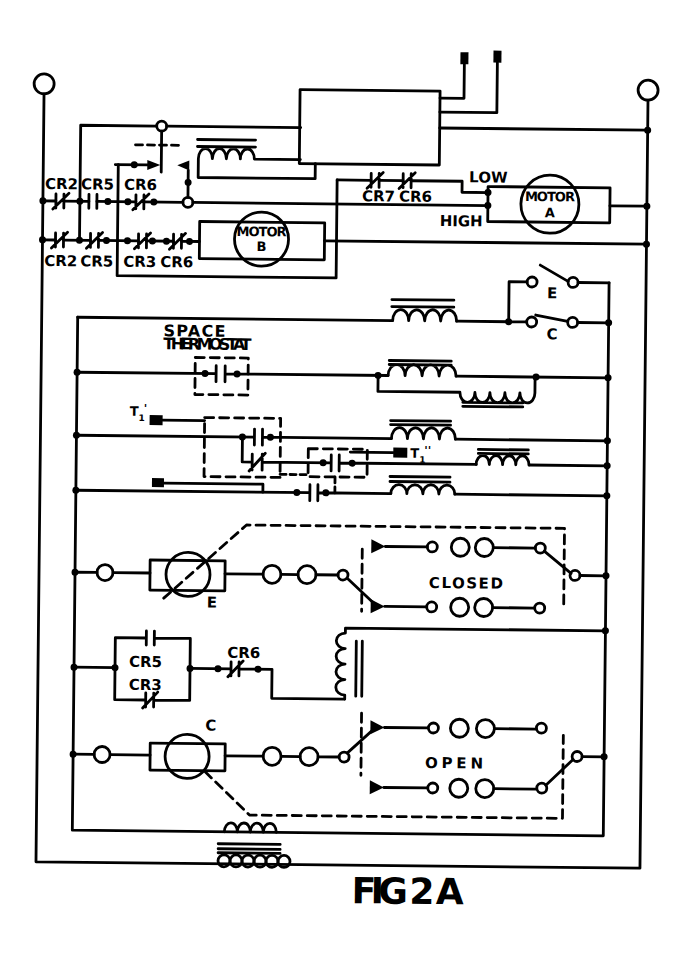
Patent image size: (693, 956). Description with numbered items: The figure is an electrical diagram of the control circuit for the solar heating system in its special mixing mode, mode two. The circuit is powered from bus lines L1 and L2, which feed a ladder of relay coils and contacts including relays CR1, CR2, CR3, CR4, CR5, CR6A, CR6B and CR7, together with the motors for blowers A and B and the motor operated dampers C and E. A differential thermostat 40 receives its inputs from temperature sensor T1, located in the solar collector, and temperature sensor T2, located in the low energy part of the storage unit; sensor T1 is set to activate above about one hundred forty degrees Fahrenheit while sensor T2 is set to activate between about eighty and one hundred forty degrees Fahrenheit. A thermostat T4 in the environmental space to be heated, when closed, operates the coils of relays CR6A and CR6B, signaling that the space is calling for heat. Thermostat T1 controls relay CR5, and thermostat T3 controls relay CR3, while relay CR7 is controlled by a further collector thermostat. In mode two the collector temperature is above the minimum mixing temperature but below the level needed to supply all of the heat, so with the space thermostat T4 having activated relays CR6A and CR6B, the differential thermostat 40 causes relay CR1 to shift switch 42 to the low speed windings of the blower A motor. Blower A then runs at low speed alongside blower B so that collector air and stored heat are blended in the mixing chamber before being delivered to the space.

The differential thermostat 40 is at (348, 95).
The switch 42 is at (163, 127).
The bus line L1 is at (52, 77).
The bus line L2 is at (658, 85).
The temperature sensor T1 is at (454, 67).
The temperature sensor T2 is at (480, 77).
The thermostat T3 is at (197, 482).
The thermostat T4 is at (232, 375).
The relay CR1 is at (256, 158).
The relay CR2 is at (424, 302).
The relay CR3 is at (422, 499).
The relay CR4 is at (471, 665).
The relay CR5 is at (422, 421).
The relay CR6A is at (422, 358).
The relay CR6B is at (457, 401).
The relay CR7 is at (502, 468).